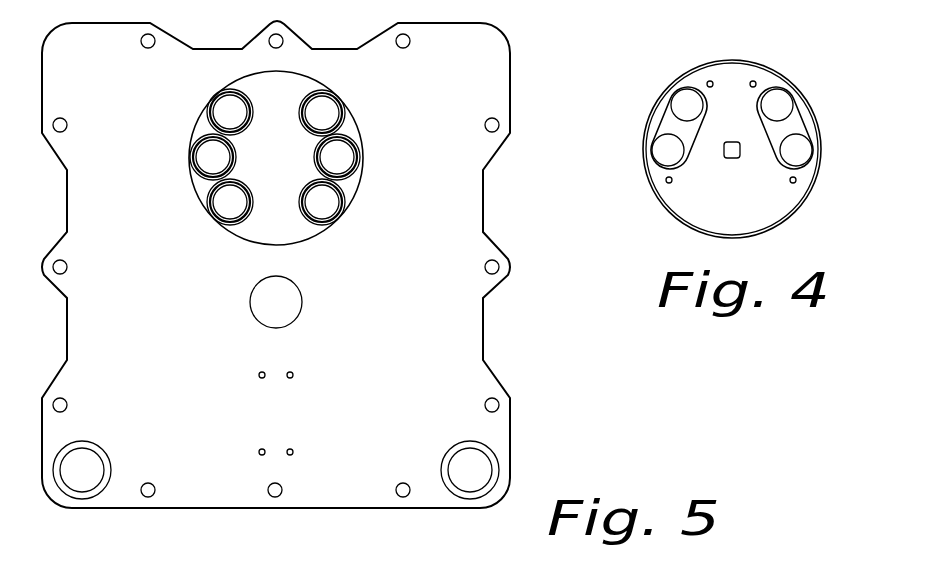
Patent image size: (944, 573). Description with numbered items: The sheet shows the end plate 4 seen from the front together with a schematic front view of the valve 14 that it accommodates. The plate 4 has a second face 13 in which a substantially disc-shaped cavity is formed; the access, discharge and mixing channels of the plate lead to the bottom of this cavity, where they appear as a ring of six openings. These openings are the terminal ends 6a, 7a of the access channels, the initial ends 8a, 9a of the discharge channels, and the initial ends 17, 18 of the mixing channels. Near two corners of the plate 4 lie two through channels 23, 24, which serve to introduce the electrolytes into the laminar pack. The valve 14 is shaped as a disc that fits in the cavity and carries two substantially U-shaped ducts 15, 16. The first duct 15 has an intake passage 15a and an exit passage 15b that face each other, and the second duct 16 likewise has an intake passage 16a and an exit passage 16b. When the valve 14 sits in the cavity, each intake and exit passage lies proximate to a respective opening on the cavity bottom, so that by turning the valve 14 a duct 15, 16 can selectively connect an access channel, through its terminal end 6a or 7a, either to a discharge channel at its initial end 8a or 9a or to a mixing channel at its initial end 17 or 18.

In FIG. 5, the plate 4 is at (316, 258).
In FIG. 5, the second face 13 is at (458, 333).
In FIG. 4, the valve 14 is at (732, 80).
In FIG. 4, the duct 15 is at (668, 123).
In FIG. 4, the intake passage 15a is at (668, 152).
In FIG. 4, the exit passage 15b is at (688, 100).
In FIG. 4, the duct 16 is at (796, 126).
In FIG. 4, the intake passage 16a is at (797, 152).
In FIG. 4, the exit passage 16b is at (775, 100).
In FIG. 5, the initial end of the mixing channel 17 is at (225, 108).
In FIG. 5, the initial end of the mixing channel 18 is at (325, 115).
In FIG. 5, the terminal end of the access channel 6a is at (205, 158).
In FIG. 5, the terminal end of the access channel 7a is at (340, 158).
In FIG. 5, the initial end of the discharge channel 8a is at (232, 202).
In FIG. 5, the initial end of the discharge channel 9a is at (322, 207).
In FIG. 5, the through channel 23 is at (82, 472).
In FIG. 5, the through channel 24 is at (470, 472).